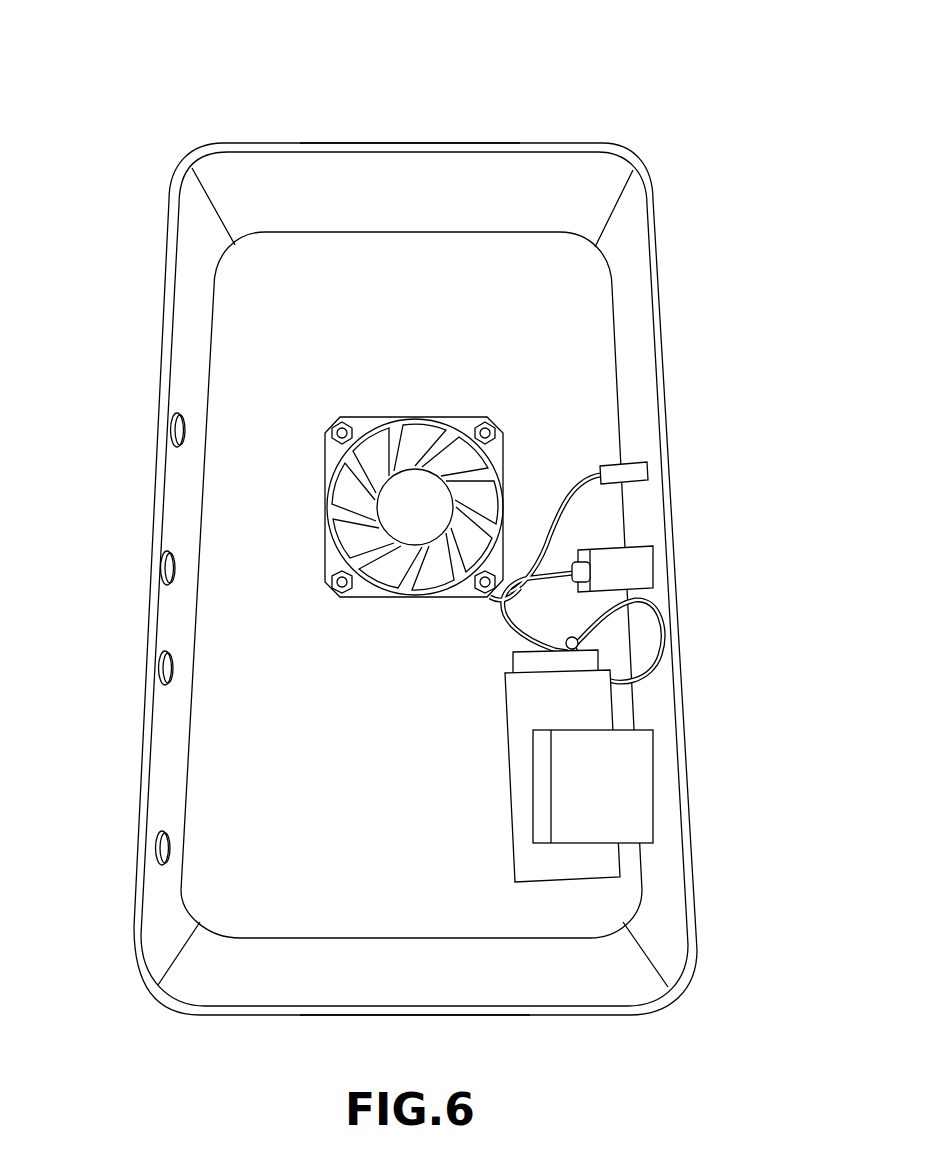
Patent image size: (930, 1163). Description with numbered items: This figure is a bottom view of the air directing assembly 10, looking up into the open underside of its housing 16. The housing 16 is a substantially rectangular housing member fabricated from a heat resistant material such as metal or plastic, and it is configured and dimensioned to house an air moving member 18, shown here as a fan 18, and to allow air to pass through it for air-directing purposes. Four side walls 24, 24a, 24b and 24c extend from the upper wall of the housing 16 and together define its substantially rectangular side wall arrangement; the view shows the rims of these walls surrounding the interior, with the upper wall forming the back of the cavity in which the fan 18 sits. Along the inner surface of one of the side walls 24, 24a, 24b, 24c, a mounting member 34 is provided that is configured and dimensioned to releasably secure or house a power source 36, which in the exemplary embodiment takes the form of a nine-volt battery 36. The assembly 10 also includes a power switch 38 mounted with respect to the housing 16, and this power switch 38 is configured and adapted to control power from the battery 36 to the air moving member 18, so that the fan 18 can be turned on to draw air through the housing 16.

The air directing assembly 10 is at (317, 90).
The housing 16 is at (582, 142).
The air moving member 18 is at (330, 455).
The side wall 24 is at (668, 440).
The side wall 24a is at (157, 503).
The side wall 24b is at (412, 143).
The side wall 24c is at (583, 1017).
The mounting member 34 is at (590, 800).
The power source 36 is at (582, 703).
The power switch 38 is at (685, 553).